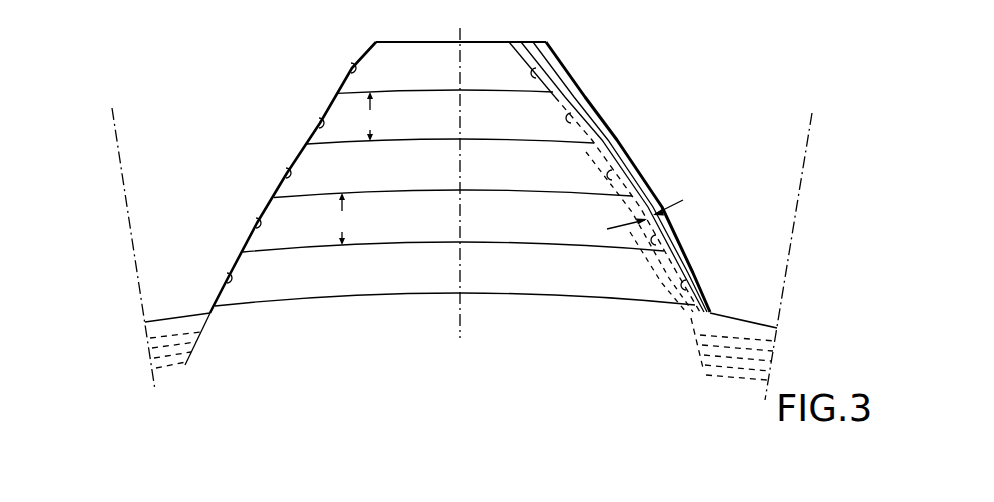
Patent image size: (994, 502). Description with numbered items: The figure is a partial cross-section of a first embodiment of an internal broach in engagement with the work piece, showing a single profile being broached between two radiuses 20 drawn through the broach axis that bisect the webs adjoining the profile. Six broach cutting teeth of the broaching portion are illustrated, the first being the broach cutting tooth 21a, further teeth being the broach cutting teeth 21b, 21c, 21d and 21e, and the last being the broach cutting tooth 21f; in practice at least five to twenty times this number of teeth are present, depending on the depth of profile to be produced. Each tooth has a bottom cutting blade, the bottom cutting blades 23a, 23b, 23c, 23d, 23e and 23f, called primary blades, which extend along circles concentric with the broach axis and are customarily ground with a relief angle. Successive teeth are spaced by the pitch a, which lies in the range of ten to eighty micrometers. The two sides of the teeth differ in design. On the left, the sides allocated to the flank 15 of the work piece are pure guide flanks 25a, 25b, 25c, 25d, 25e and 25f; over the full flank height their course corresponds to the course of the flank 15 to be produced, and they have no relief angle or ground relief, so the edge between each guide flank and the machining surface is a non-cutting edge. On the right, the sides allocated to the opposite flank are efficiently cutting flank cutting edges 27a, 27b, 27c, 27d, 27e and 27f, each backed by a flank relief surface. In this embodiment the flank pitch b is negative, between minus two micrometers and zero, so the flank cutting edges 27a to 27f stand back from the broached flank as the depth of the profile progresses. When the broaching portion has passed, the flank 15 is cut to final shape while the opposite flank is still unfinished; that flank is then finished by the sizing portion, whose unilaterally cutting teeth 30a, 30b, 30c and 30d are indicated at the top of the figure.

The flank 15 is at (297, 147).
The radiuses 20 is at (114, 127).
The broach cutting tooth 21a is at (447, 334).
The broach cutting tooth 21b is at (447, 282).
The broach cutting tooth 21c is at (446, 229).
The broach cutting tooth 21d is at (447, 177).
The broach cutting tooth 21e is at (447, 126).
The broach cutting tooth 21f is at (446, 77).
The bottom cutting blade 23a is at (504, 296).
The bottom cutting blade 23b is at (503, 245).
The bottom cutting blade 23c is at (498, 194).
The bottom cutting blade 23d is at (495, 142).
The bottom cutting blade 23e is at (488, 93).
The bottom cutting blade 23f is at (483, 43).
The guide flank 25a is at (214, 314).
The guide flank 25b is at (225, 277).
The guide flank 25c is at (254, 222).
The guide flank 25d is at (284, 173).
The guide flank 25e is at (317, 121).
The guide flank 25f is at (349, 68).
The flank cutting edge 27a is at (700, 314).
The flank cutting edge 27b is at (689, 285).
The flank cutting edge 27c is at (660, 245).
The flank cutting edge 27d is at (614, 180).
The flank cutting edge 27e is at (570, 124).
The flank cutting edge 27f is at (538, 77).
The unilaterally cutting tooth 30a is at (508, 42).
The unilaterally cutting tooth 30b is at (520, 42).
The unilaterally cutting tooth 30c is at (533, 42).
The unilaterally cutting tooth 30d is at (547, 42).
The pitch a is at (356, 168).
The flank pitch b is at (637, 218).